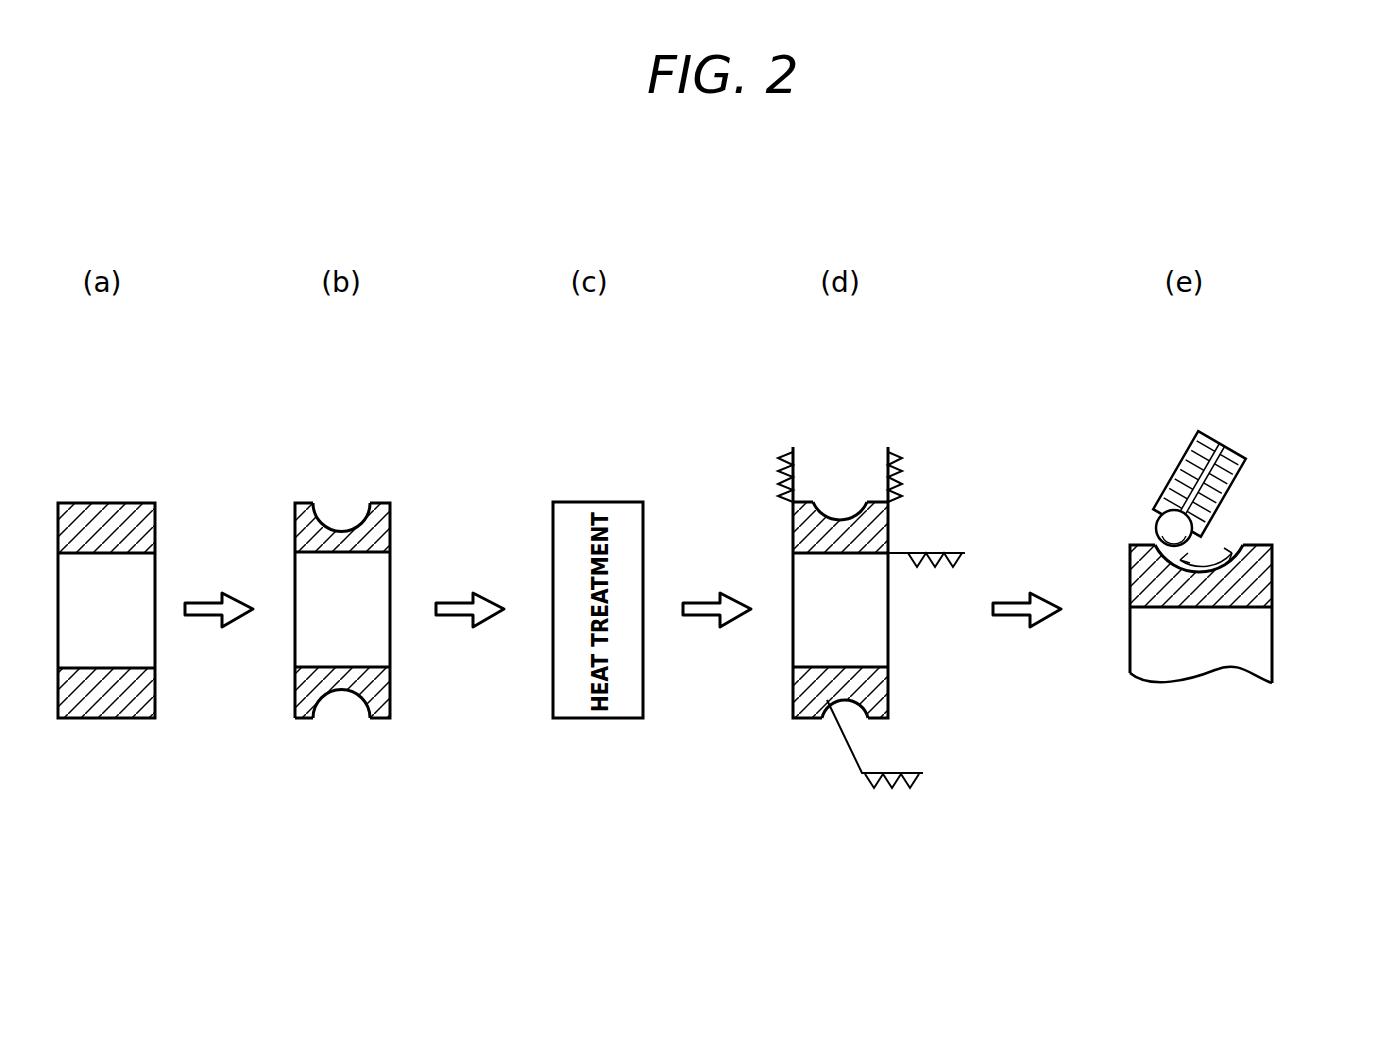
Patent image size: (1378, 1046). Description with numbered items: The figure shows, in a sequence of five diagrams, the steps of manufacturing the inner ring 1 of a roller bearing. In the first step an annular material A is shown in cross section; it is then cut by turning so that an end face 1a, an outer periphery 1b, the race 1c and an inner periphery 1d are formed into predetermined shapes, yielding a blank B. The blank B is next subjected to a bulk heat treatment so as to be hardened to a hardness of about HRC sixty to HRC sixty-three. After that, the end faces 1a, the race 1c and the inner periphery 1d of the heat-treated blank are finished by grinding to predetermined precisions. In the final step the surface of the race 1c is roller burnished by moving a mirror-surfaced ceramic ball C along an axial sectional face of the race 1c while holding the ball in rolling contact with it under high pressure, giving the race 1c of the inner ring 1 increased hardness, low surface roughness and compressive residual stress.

The annular material A is at (129, 482).
The blank B is at (362, 478).
The mirror-surfaced ceramic ball C is at (1165, 532).
The inner ring 1 is at (1297, 532).
The end face 1a is at (296, 541).
The outer periphery 1b is at (383, 722).
The race 1c is at (340, 531).
The inner periphery 1d is at (357, 554).